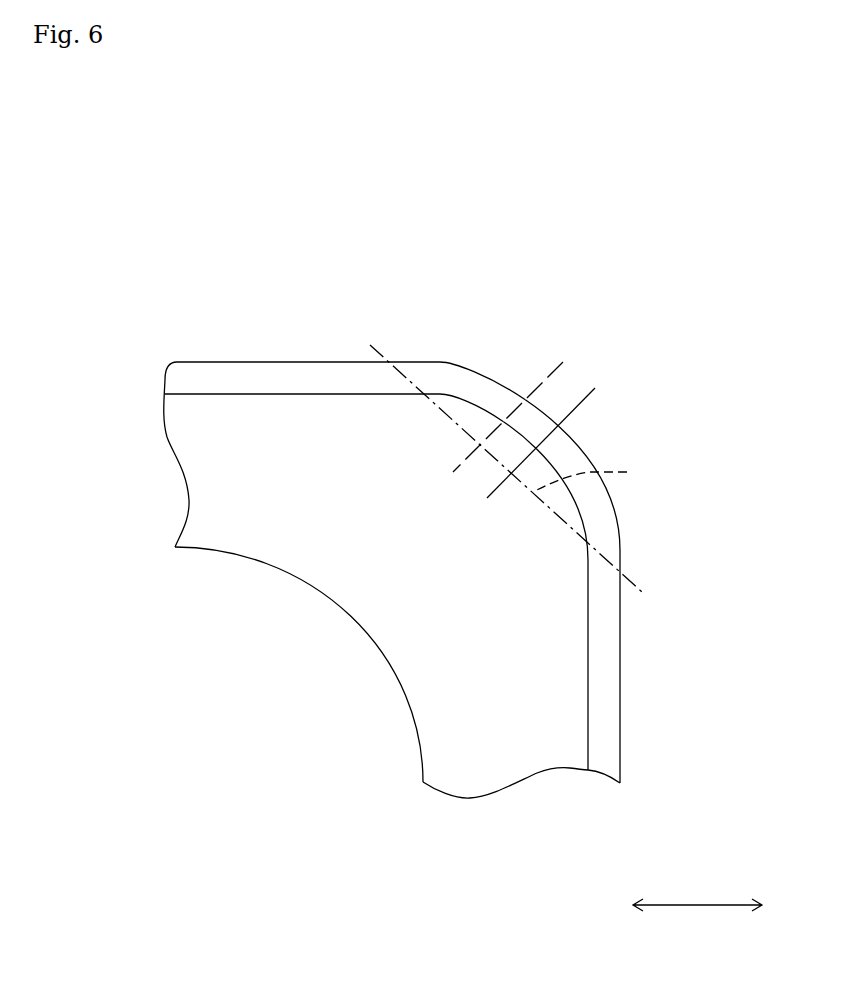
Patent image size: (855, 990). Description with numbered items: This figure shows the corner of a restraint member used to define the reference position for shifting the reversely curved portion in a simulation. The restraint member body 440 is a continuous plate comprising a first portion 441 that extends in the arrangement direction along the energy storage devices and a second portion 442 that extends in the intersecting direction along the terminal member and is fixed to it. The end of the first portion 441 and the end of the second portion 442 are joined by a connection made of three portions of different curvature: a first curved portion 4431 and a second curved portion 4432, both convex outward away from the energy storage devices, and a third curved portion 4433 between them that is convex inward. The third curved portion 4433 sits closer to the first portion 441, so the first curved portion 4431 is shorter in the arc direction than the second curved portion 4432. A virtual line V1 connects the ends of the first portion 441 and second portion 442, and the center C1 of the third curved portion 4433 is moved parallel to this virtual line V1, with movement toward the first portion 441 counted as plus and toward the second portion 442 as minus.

The restraint member body 440 is at (340, 570).
The first portion 441 is at (423, 333).
The second portion 442 is at (647, 545).
The first curved portion 4431 is at (482, 367).
The second curved portion 4432 is at (587, 443).
The third curved portion (reversely curved portion) 4433 is at (507, 426).
The center of the third curved portion C1 is at (560, 368).
The virtual line V1 is at (595, 475).